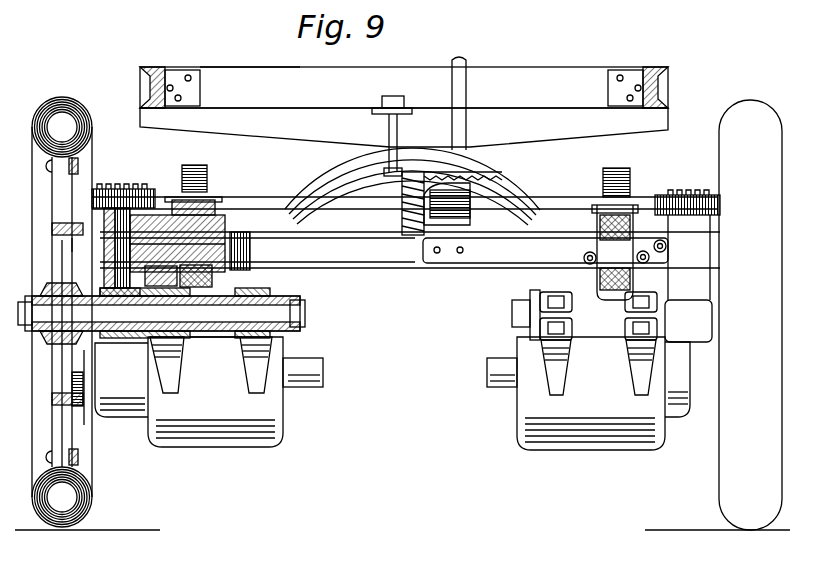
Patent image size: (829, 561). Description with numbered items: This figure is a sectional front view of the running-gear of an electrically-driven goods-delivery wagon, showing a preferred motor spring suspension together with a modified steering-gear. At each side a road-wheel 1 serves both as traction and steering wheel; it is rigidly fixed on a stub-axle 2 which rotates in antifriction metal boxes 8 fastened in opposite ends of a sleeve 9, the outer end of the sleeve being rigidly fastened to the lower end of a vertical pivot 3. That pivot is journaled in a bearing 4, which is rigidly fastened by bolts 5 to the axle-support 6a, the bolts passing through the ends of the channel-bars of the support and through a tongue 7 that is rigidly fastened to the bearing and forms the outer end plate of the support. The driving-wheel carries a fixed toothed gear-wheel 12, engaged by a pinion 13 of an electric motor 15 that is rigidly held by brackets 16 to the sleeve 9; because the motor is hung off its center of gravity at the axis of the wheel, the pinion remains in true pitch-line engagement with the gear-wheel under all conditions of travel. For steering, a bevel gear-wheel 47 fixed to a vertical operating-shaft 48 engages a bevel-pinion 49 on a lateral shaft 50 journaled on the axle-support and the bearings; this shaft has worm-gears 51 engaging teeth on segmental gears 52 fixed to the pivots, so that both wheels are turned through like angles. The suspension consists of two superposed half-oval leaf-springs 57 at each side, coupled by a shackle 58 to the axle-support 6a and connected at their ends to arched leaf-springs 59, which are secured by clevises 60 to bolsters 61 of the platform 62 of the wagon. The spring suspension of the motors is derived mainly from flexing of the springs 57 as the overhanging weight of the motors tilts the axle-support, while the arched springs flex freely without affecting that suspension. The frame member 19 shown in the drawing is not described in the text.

The road-wheel 1 is at (50, 108).
The stub-axle 2 is at (265, 321).
The vertical pivot 3 is at (118, 226).
The bearing 4 is at (107, 258).
The bolts 5 is at (662, 250).
The axle-support 6a is at (410, 250).
The tongue 7 is at (170, 245).
The antifriction metal boxes 8 is at (276, 300).
The sleeve 9 is at (200, 337).
The toothed gear-wheel 12 is at (75, 244).
The pinion 13 is at (86, 405).
The motor 15 is at (392, 393).
The brackets 16 is at (250, 370).
The frame beam 19 is at (404, 87).
The bevel gear-wheel 47 is at (490, 172).
The vertical operating-shaft 48 is at (467, 85).
The bevel-pinion 49 is at (400, 186).
The lateral shaft 50 is at (352, 199).
The worm-gears 51 is at (150, 183).
The segmental gears 52 is at (100, 189).
The leaf-springs 57 is at (208, 178).
The shackle 58 is at (212, 278).
The arched leaf-springs 59 is at (340, 164).
The clevises 60 is at (397, 136).
The bolsters 61 is at (404, 127).
The platform 62 is at (250, 72).